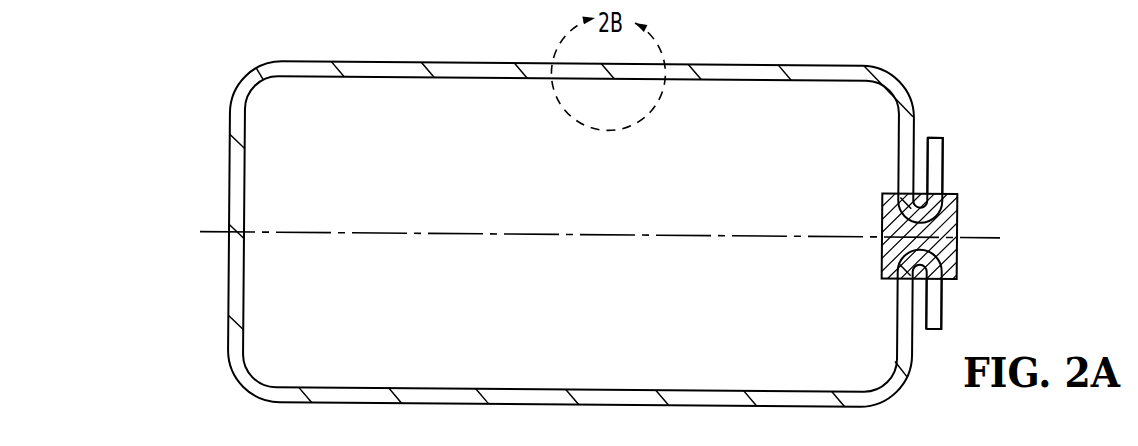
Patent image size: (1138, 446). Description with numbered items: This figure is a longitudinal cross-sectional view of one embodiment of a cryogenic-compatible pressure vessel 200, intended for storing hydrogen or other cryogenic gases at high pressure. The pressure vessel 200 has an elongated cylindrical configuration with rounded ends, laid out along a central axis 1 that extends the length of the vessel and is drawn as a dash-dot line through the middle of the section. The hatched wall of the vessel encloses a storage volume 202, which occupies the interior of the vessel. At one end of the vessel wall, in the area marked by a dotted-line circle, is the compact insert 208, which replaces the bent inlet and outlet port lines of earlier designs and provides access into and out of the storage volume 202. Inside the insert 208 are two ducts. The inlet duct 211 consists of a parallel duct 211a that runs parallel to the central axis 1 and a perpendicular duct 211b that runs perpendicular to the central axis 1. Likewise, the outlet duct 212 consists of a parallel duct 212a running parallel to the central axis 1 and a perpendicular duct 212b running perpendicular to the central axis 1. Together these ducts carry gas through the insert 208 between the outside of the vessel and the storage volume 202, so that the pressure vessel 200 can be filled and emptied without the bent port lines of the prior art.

The central axis 1 is at (580, 234).
The pressure vessel 200 is at (978, 60).
The storage volume 202 is at (562, 289).
The insert 208 is at (957, 221).
The inlet duct 211 is at (922, 182).
The parallel duct 211a is at (898, 200).
The perpendicular duct 211b is at (935, 206).
The outlet duct 212 is at (926, 285).
The parallel duct 212a is at (898, 280).
The perpendicular duct 212b is at (935, 272).